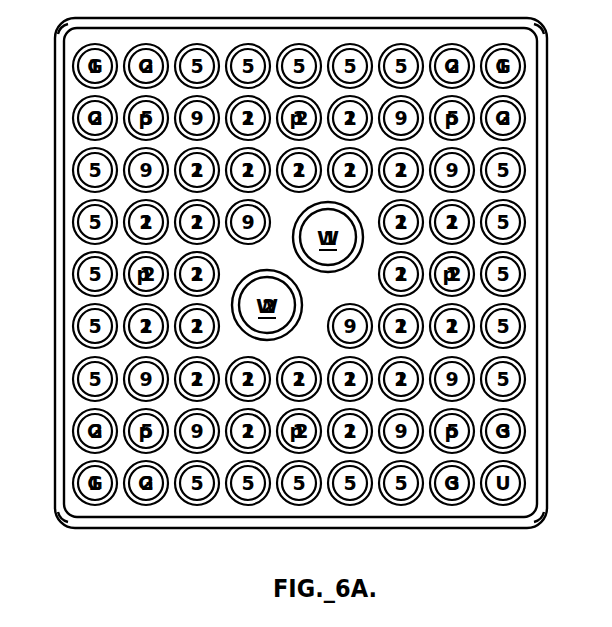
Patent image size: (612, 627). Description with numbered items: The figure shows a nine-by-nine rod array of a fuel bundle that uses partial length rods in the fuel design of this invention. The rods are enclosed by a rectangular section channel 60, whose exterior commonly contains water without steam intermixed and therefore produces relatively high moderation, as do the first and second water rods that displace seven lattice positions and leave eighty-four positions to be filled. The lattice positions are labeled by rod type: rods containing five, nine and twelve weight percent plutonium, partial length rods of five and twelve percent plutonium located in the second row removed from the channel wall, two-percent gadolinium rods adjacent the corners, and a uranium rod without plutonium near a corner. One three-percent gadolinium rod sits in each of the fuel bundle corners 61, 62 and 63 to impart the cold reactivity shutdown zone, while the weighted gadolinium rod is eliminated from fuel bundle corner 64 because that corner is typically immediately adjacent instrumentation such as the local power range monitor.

The channel 60 is at (262, 529).
The fuel bundle corner 61 is at (59, 519).
The fuel bundle corner 62 is at (542, 28).
The fuel bundle corner 63 is at (58, 30).
The fuel bundle corner 64 is at (545, 514).